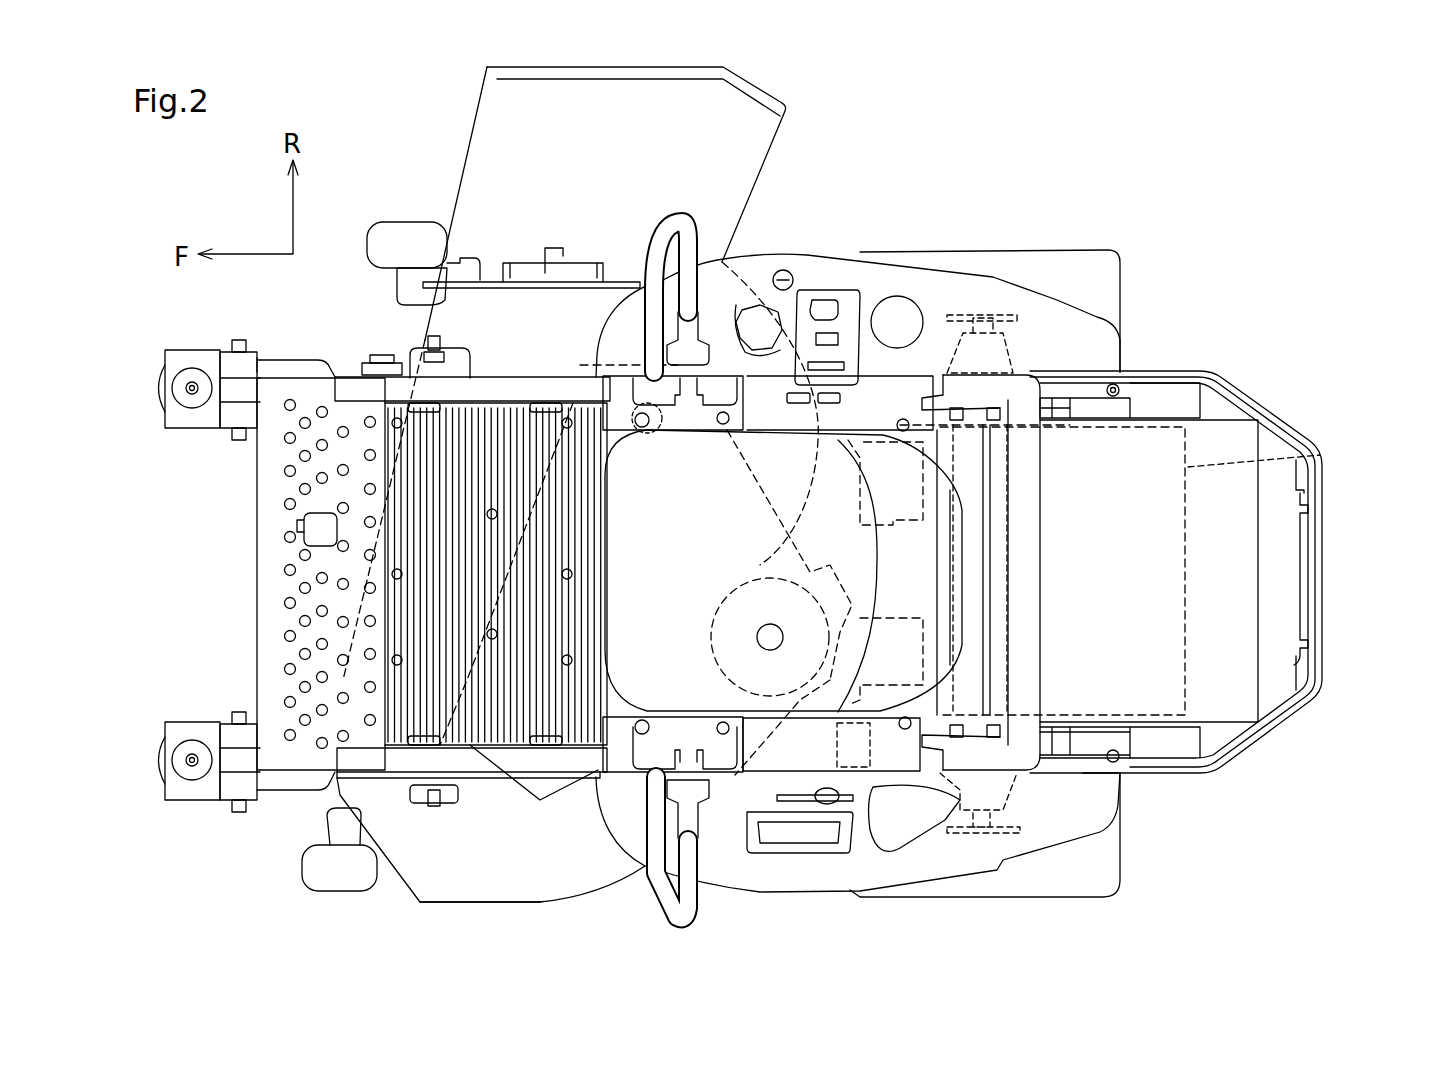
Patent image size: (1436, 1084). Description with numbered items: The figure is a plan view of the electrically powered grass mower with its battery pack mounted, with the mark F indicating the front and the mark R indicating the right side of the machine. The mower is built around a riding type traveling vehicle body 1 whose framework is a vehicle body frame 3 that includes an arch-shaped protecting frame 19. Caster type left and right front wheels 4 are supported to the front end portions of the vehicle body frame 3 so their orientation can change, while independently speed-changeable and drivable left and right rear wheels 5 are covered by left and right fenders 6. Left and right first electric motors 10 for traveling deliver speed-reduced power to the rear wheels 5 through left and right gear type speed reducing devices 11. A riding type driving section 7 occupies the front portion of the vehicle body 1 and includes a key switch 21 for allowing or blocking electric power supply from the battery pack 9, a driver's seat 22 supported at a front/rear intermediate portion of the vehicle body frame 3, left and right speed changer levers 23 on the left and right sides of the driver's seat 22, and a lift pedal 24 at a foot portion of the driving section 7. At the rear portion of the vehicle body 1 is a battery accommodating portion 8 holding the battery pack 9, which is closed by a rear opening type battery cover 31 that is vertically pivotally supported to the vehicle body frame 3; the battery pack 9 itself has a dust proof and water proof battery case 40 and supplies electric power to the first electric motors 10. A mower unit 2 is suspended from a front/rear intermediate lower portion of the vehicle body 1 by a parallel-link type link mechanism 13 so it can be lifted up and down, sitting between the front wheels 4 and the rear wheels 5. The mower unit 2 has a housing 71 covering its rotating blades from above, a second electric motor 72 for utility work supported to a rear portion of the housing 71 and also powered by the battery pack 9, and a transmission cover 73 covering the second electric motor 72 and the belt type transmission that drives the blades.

The traveling vehicle body 1 is at (170, 302).
The mower unit 2 is at (398, 899).
The vehicle body frame 3 is at (346, 367).
The front wheels 4 is at (288, 363).
The rear wheels 5 is at (1077, 260).
The fenders 6 is at (840, 262).
The driving section 7 is at (276, 583).
The battery accommodating portion 8 is at (1222, 348).
The battery pack 9 is at (1190, 465).
The first electric motors 10 is at (872, 527).
The gear type speed reducing devices 11 is at (953, 345).
The link mechanism 13 is at (499, 800).
The protecting frame 19 is at (1037, 572).
The key switch 21 is at (784, 270).
The driver's seat 22 is at (985, 577).
The speed changer levers 23 is at (670, 238).
The lift pedal 24 is at (318, 522).
The battery cover 31 is at (1332, 449).
The battery case 40 is at (1185, 573).
The housing 71 is at (502, 882).
The second electric motor 72 is at (716, 612).
The transmission cover 73 is at (537, 795).